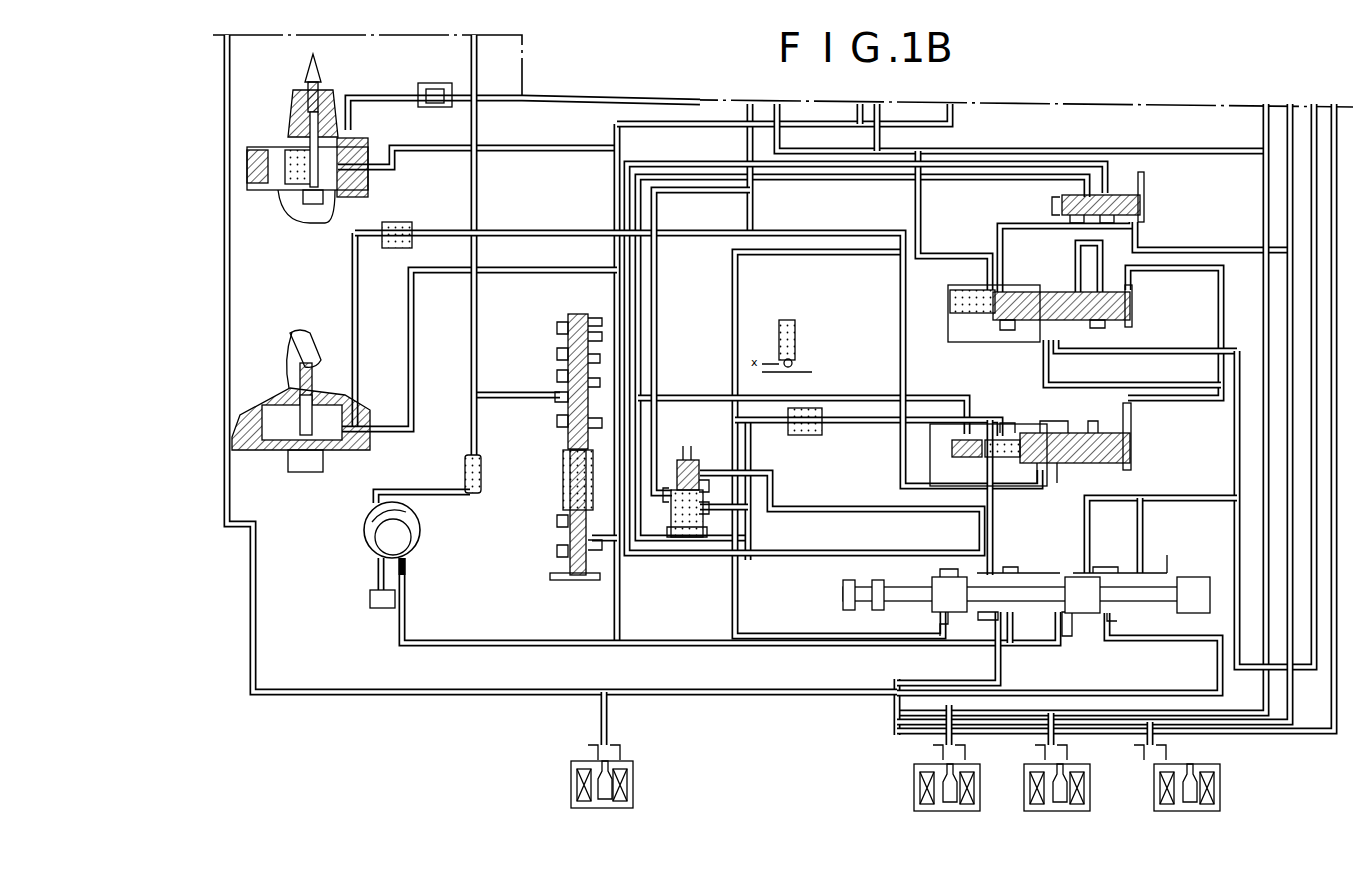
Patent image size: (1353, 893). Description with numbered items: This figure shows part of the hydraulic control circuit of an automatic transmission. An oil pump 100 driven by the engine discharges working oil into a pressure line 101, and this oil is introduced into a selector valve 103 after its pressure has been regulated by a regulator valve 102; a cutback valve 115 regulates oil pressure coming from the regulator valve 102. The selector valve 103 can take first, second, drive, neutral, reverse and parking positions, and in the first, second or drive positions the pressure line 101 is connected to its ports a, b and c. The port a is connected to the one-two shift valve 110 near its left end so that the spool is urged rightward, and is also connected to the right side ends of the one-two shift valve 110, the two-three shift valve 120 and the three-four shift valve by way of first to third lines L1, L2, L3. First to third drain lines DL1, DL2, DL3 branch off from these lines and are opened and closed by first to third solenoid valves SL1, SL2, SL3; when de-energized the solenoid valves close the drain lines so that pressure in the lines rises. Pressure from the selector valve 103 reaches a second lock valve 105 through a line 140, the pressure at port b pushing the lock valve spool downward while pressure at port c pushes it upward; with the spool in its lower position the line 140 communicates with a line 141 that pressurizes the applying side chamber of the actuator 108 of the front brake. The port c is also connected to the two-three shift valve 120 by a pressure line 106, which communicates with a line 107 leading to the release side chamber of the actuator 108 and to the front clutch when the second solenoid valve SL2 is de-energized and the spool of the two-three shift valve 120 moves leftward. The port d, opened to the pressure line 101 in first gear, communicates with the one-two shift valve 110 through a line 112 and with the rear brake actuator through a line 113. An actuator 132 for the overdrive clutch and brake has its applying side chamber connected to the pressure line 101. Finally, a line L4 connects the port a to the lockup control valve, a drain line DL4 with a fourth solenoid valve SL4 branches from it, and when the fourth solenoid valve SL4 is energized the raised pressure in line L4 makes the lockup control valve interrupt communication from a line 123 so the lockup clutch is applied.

The oil pump 100 is at (385, 535).
The pressure line 101 is at (736, 124).
The regulator valve 102 is at (535, 527).
The selector valve 103 is at (923, 580).
The second lock valve 105 is at (697, 452).
The pressure line 106 is at (830, 437).
The line 107 is at (892, 474).
The actuator of the front brake 108 is at (276, 452).
The 1-2 shift valve 110 is at (1010, 332).
The line 112 is at (1233, 535).
The line 113 is at (1088, 383).
The cutback valve 115 is at (1152, 186).
The 2-3 shift valve 120 is at (1045, 422).
The line 123 is at (482, 188).
The actuator 132 is at (282, 213).
The line 140 is at (775, 492).
The line 141 is at (660, 332).
The first line L1 is at (1114, 692).
The second line L2 is at (1270, 738).
The third line L3 is at (1306, 740).
The line L4 is at (350, 697).
The first drain line DL1 is at (956, 742).
The second drain line DL2 is at (1060, 742).
The third drain line DL3 is at (1160, 742).
The drain line DL4 is at (610, 722).
The first solenoid valve SL1 is at (914, 775).
The second solenoid valve SL2 is at (1090, 775).
The third solenoid valve SL3 is at (1220, 775).
The fourth solenoid valve SL4 is at (633, 772).
The port a is at (994, 625).
The port b is at (990, 574).
The port c is at (950, 630).
The port d is at (1108, 623).